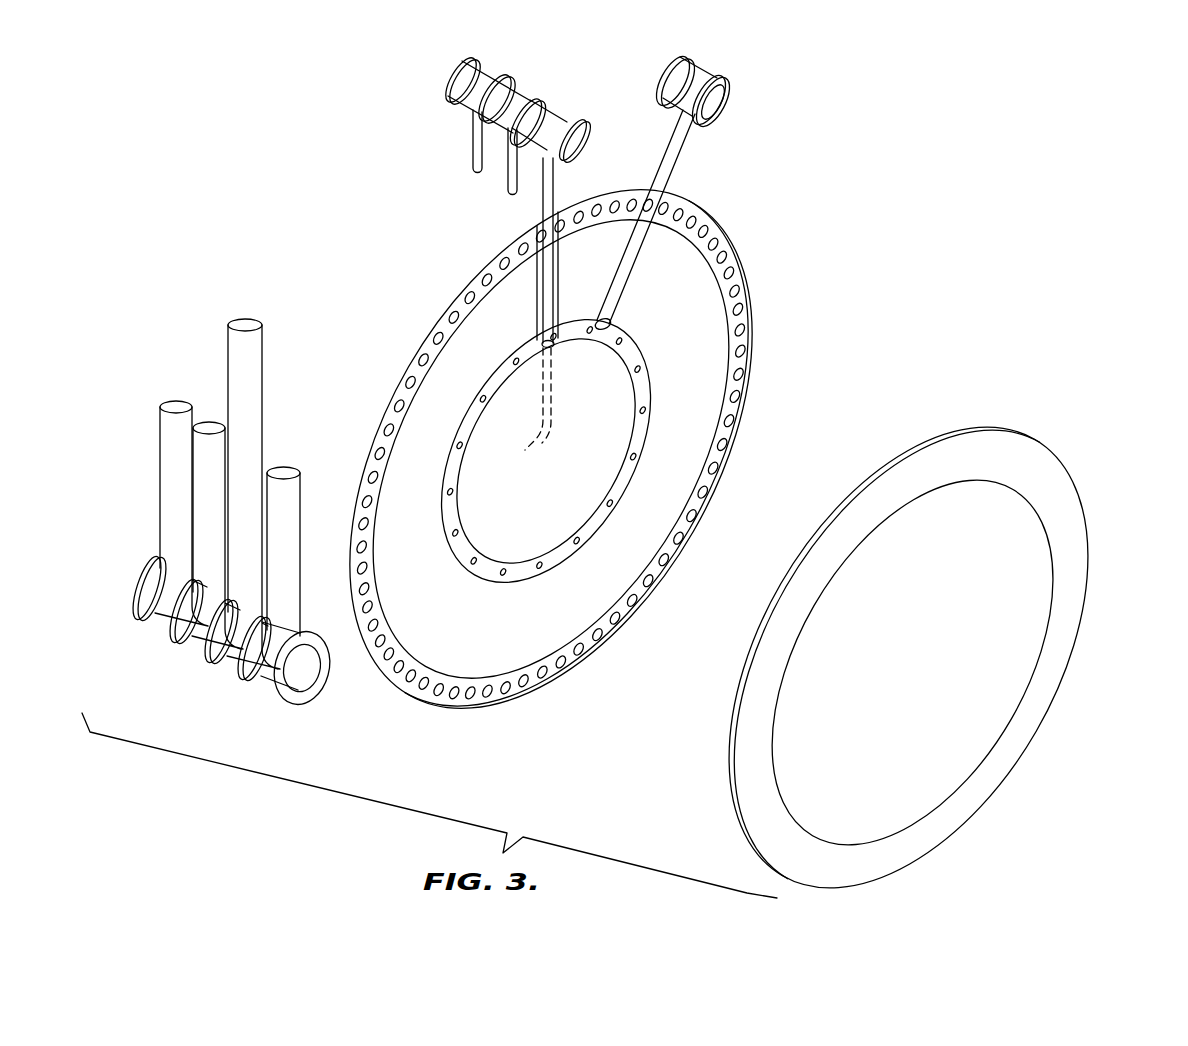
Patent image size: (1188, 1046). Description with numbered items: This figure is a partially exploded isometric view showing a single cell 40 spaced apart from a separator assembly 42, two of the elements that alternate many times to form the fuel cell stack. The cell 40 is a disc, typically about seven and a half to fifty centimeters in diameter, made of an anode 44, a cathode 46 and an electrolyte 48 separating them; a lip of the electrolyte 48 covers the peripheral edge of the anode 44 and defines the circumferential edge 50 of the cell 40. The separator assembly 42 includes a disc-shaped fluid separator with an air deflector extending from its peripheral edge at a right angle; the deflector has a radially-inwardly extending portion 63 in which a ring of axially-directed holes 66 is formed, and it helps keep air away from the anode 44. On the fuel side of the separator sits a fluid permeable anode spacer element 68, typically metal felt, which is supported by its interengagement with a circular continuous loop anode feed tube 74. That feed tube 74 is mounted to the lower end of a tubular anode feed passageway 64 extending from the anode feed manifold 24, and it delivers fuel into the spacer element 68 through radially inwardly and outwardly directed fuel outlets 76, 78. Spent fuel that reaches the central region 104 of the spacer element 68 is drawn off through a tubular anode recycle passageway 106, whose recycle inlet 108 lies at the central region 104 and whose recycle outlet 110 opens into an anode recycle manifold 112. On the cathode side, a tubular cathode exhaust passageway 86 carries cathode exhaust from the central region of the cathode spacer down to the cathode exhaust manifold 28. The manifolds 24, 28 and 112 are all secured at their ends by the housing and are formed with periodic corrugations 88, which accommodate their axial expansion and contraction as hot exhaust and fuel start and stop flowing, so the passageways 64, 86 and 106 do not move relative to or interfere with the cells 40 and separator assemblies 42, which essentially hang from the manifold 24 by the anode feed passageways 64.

The fuel manifold 24 is at (712, 78).
The cathode exhaust manifold 28 is at (268, 663).
The cell 40 is at (1093, 464).
The separator assembly 42 is at (757, 256).
The anode 44 is at (928, 455).
The cathode 46 is at (1022, 634).
The electrolyte 48 is at (908, 658).
The circumferential edge 50 is at (1030, 432).
The radially-inwardly extending portion 63 is at (735, 451).
The tubular anode feed passageway 64 is at (672, 163).
The axially-directed holes 66 is at (708, 524).
The anode spacer element 68 is at (708, 370).
The continuous loop anode feed tube 74 is at (490, 572).
The radially inwardly directed fuel outlets 76 is at (608, 530).
The radially outwardly directed fuel outlets 78 is at (460, 496).
The tubular cathode exhaust passageway 86 is at (262, 393).
The periodic corrugations 88 is at (505, 76).
The central region 104 is at (571, 452).
The tubular anode recycle passageway 106 is at (509, 184).
The recycle inlet 108 is at (524, 478).
The recycle outlet 110 is at (582, 145).
The anode recycle manifold 112 is at (515, 90).